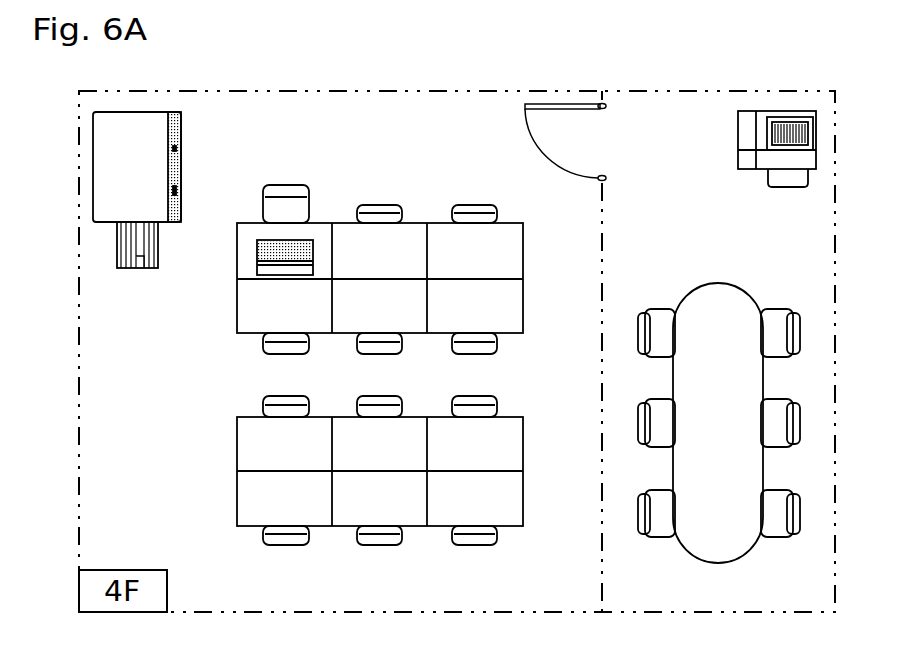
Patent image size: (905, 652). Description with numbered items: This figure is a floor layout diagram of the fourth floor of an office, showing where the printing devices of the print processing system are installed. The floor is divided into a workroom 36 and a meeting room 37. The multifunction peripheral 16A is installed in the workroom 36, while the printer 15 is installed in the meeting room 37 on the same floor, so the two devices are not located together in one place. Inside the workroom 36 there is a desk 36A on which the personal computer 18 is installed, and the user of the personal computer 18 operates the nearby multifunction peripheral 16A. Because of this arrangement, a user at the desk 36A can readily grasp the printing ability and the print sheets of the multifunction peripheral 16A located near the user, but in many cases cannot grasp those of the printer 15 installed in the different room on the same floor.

The multifunction peripheral 16A is at (181, 139).
The personal computer 18 is at (315, 255).
The desk 36A is at (236, 251).
The workroom 36 is at (176, 388).
The printer 15 is at (738, 142).
The meeting room 37 is at (730, 262).